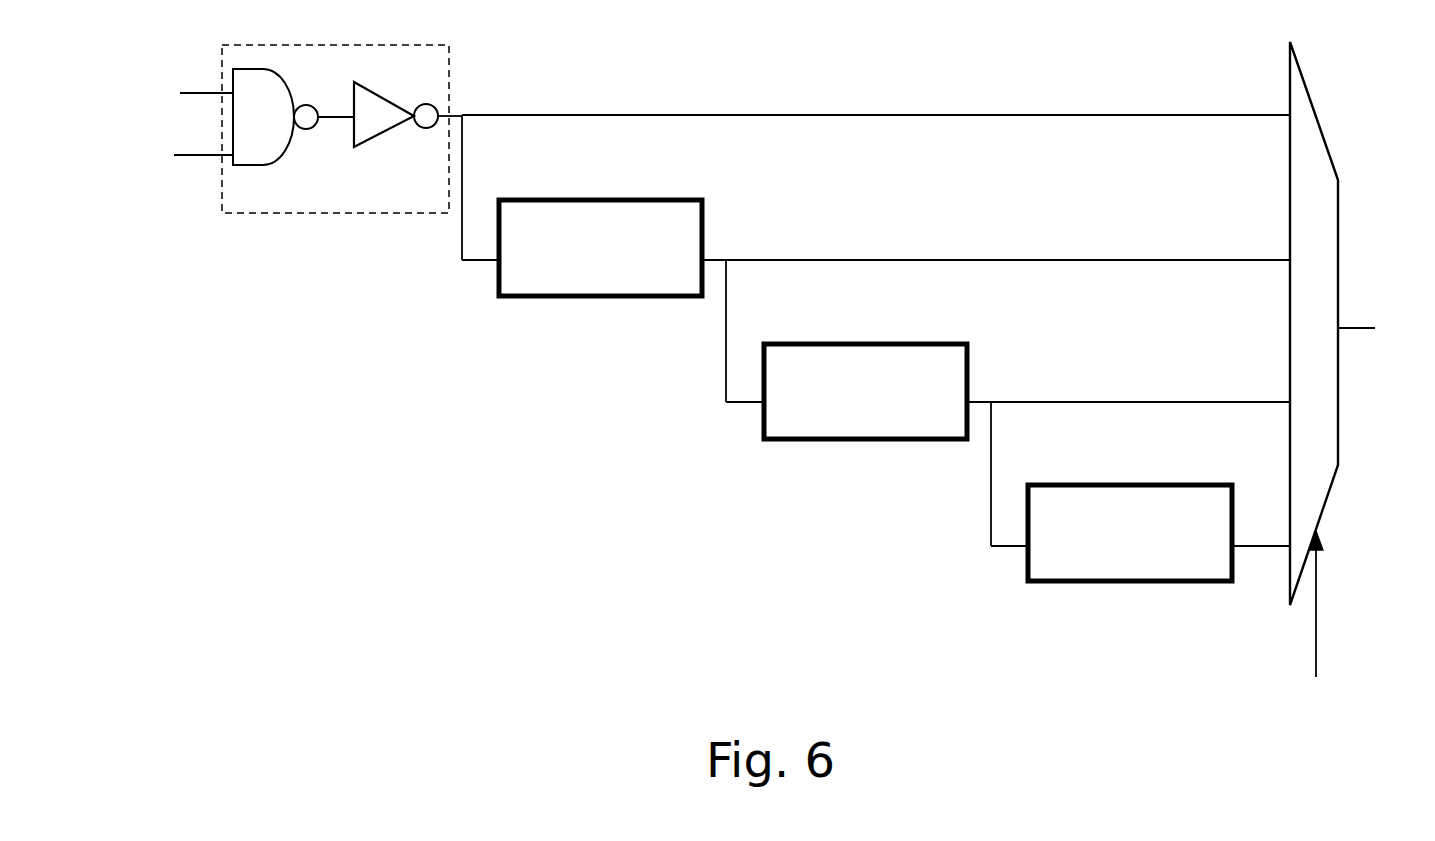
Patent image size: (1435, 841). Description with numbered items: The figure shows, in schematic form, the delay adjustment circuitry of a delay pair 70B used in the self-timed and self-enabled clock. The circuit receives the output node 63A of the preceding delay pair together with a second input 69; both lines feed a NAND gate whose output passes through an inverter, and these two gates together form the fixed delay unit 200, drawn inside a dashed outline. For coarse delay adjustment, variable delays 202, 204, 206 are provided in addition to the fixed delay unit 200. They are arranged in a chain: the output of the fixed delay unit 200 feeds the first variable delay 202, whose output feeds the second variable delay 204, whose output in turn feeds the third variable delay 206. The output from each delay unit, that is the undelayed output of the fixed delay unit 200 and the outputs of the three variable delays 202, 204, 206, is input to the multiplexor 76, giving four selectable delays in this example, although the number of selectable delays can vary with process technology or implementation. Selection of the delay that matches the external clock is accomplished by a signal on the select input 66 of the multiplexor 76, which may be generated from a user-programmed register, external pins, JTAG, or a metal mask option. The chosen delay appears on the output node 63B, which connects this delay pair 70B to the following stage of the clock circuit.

The output node 63A is at (175, 92).
The input to fixed delay unit 69 is at (175, 153).
The fixed delay unit 200 is at (342, 129).
The variable delay 202 is at (600, 248).
The variable delay 204 is at (865, 391).
The variable delay 206 is at (1130, 533).
The multiplexor (MUX) 76 is at (1314, 323).
The output node 63B is at (1383, 305).
The select input 66 is at (1346, 607).
The delay pair 70B is at (773, 363).